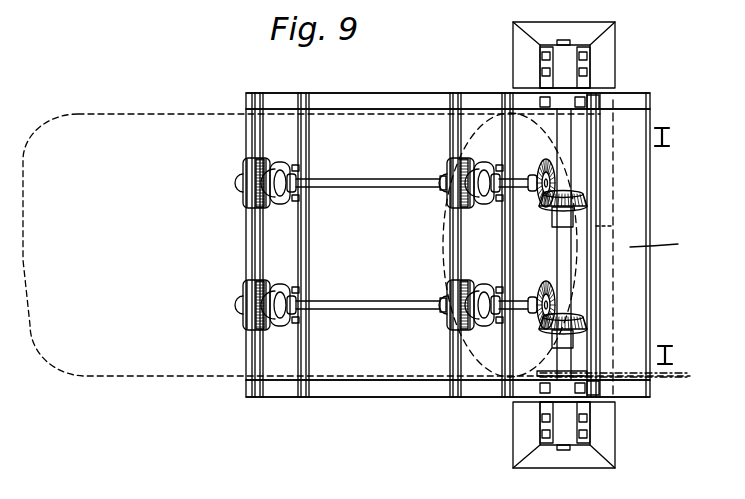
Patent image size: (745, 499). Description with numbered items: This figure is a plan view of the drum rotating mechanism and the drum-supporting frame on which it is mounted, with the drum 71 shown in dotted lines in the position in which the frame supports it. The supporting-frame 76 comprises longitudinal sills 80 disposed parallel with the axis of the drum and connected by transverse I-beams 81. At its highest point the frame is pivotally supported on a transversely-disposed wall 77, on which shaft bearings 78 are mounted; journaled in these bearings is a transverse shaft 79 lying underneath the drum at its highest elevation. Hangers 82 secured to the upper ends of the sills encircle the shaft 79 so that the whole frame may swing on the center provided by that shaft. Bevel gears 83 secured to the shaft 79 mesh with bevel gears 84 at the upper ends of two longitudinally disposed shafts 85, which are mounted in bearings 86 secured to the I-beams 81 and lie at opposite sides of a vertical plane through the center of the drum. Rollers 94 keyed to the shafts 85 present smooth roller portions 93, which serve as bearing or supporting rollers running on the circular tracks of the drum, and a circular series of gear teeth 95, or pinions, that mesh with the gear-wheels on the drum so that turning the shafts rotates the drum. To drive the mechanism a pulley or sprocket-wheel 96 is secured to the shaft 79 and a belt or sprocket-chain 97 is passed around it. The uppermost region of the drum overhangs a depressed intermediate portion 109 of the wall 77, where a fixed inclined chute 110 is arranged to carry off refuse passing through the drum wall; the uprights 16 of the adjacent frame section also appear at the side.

The uprights 16 is at (665, 150).
The drum 71 is at (202, 124).
The supporting-frame 76 is at (389, 403).
The transversely-disposed wall 77 is at (600, 272).
The shaft bearings 78 is at (560, 68).
The shaft 79 is at (566, 259).
The longitudinal sills 80 is at (372, 98).
The transverse I-beams 81 is at (295, 237).
The hangers 82 is at (562, 110).
The bevel gears 83 is at (576, 206).
The bevel gears 84 is at (540, 205).
The longitudinally disposed shafts 85 is at (386, 188).
The bearings 86 is at (300, 183).
The smooth roller portions 93 is at (277, 162).
The rollers 94 is at (250, 207).
The gear teeth 95 is at (256, 172).
The pulley or sprocket-wheel 96 is at (556, 340).
The belt or sprocket-chain 97 is at (640, 380).
The depressed intermediate portion 109 is at (621, 226).
The fixed inclined chute 110 is at (669, 244).